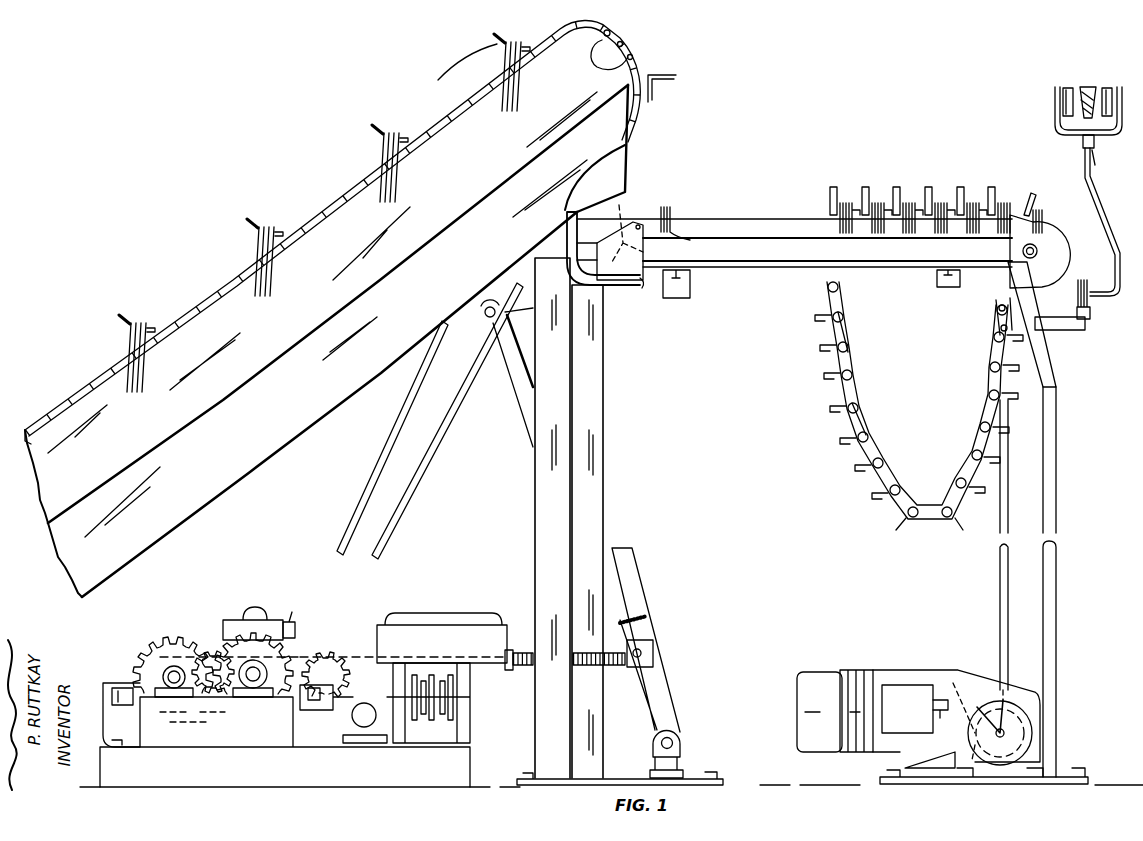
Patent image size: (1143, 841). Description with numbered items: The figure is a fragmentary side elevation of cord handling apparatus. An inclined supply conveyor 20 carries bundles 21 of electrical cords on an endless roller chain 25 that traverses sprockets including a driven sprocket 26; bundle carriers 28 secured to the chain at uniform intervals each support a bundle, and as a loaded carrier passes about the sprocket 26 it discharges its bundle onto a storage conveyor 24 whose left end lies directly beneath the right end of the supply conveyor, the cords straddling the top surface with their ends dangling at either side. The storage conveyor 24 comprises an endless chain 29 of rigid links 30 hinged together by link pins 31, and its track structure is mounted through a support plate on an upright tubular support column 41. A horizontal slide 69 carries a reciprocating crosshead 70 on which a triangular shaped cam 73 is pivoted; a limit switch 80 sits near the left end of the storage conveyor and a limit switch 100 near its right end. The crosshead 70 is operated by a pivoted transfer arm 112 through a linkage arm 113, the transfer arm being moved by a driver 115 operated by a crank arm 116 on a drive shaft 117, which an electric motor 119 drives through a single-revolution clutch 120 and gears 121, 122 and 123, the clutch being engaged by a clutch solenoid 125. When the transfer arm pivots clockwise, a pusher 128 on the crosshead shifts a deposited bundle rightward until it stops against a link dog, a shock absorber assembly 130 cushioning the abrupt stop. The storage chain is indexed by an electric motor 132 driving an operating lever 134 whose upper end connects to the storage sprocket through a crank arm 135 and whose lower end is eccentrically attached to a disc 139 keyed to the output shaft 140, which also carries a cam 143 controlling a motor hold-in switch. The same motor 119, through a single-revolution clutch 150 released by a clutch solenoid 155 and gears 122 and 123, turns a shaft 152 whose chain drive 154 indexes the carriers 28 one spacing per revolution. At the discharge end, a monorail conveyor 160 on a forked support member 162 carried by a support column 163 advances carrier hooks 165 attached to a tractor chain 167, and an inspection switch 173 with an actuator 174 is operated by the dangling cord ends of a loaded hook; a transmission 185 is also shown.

The inclined supply conveyor 20 is at (234, 200).
The bundle 21 is at (232, 314).
The storage conveyor 24 is at (785, 282).
The endless roller chain 25 is at (333, 207).
The driven sprocket 26 is at (626, 53).
The bundle carrier 28 is at (398, 137).
The endless chain 29 is at (890, 444).
The rigid link 30 is at (853, 331).
The link pin 31 is at (860, 396).
The tubular support column 41 is at (603, 386).
The horizontal slide 69 is at (688, 255).
The crosshead 70 is at (640, 283).
The triangular shaped cam 73 is at (620, 239).
The limit switch 80 is at (680, 298).
The limit switch 100 is at (948, 293).
The pivoted transfer arm 112 is at (643, 580).
The linkage arm 113 is at (525, 320).
The driver 115 is at (515, 667).
The crank arm 116 is at (160, 646).
The drive shaft 117 is at (175, 690).
The electric motor 119 is at (372, 632).
The single-revolution clutch 120 is at (174, 669).
The gear 121 is at (187, 645).
The gear 122 is at (296, 652).
The gear 123 is at (332, 660).
The clutch solenoid 125 is at (122, 685).
The pusher 128 is at (603, 234).
The shock absorber assembly 130 is at (616, 667).
The electric motor 132 is at (887, 672).
The operating lever 134 is at (1000, 572).
The crank arm 135 is at (925, 722).
The disc 139 is at (1010, 775).
The output shaft 140 is at (983, 712).
The cam 143 is at (978, 777).
The single-revolution clutch 150 is at (253, 650).
The shaft 152 is at (258, 682).
The chain drive 154 is at (372, 458).
The clutch solenoid 155 is at (335, 693).
The monorail conveyor 160 is at (1025, 108).
The forked support member 162 is at (1074, 378).
The support column 163 is at (1056, 445).
The carrier hook 165 is at (1085, 180).
The tractor chain 167 is at (1095, 156).
The inspection switch 173 is at (1085, 324).
The actuator 174 is at (1090, 306).
The transmission 185 is at (462, 707).